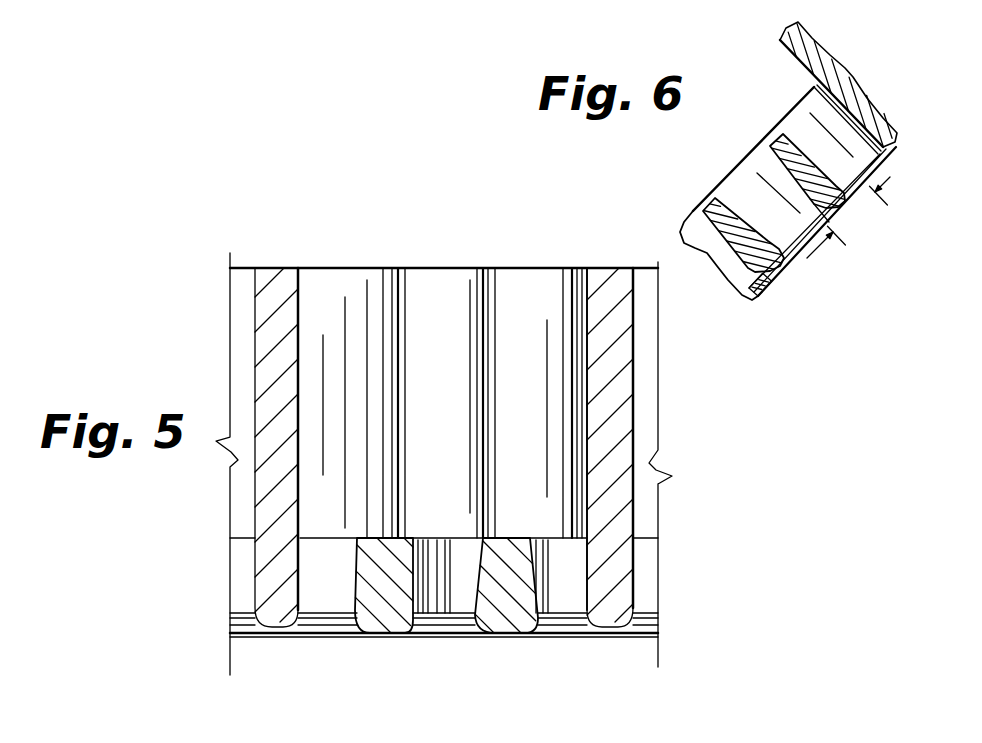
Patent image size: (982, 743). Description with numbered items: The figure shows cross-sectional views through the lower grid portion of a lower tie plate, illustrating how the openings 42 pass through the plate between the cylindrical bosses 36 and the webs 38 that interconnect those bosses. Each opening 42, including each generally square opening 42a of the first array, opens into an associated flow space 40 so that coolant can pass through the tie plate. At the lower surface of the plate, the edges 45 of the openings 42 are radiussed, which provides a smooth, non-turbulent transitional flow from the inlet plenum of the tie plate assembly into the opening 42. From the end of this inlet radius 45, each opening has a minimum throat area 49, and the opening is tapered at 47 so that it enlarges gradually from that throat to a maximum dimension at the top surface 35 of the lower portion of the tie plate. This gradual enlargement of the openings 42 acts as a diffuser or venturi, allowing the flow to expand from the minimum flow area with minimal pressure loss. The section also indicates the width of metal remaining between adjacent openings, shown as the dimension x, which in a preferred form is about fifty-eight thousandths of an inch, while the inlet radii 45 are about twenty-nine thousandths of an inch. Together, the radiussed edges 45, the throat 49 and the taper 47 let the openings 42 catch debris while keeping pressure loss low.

In FIG. 6, the top surface 35 is at (690, 227).
In FIG. 5, the cylindrical boss 36 is at (344, 281).
In FIG. 6, the cylindrical boss 36 is at (827, 62).
In FIG. 5, the web 38 is at (268, 283).
In FIG. 5, the flow space 40 is at (460, 317).
In FIG. 6, the flow space 40 is at (787, 92).
In FIG. 5, the opening 42 is at (315, 595).
In FIG. 5, the opening of the first array 42a is at (463, 603).
In FIG. 5, the radiussed edge 45 is at (418, 637).
In FIG. 6, the radiussed edge 45 is at (793, 263).
In FIG. 5, the taper 47 is at (347, 580).
In FIG. 6, the taper 47 is at (737, 204).
In FIG. 6, the minimum throat area 49 is at (812, 245).